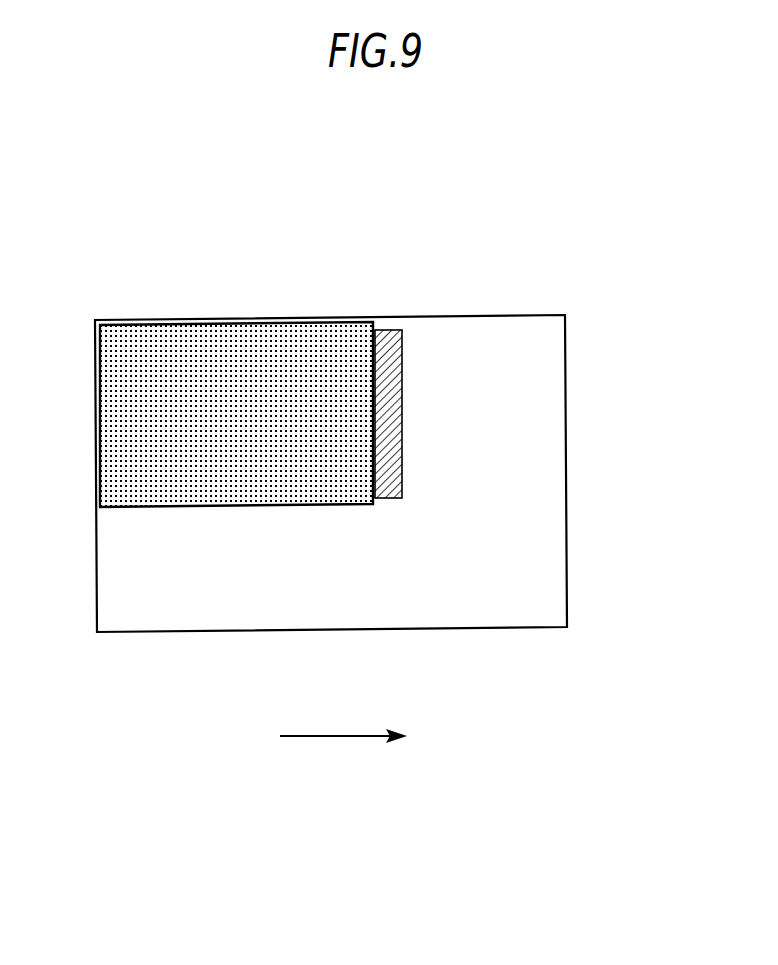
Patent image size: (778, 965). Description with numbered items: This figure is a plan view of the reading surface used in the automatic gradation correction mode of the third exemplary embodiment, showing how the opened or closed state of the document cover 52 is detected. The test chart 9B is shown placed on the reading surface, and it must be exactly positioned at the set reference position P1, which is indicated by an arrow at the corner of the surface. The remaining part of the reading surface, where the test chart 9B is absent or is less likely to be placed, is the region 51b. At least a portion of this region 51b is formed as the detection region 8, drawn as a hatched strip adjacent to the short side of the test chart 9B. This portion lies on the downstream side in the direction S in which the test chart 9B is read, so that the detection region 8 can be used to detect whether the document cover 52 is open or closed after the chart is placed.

The document cover 52 is at (572, 469).
The region of the reading surface in which the test chart is absent 51b is at (482, 588).
The test chart 9B is at (243, 340).
The detection region 8 is at (402, 375).
The set reference position P1 is at (88, 314).
The reading direction S is at (332, 737).